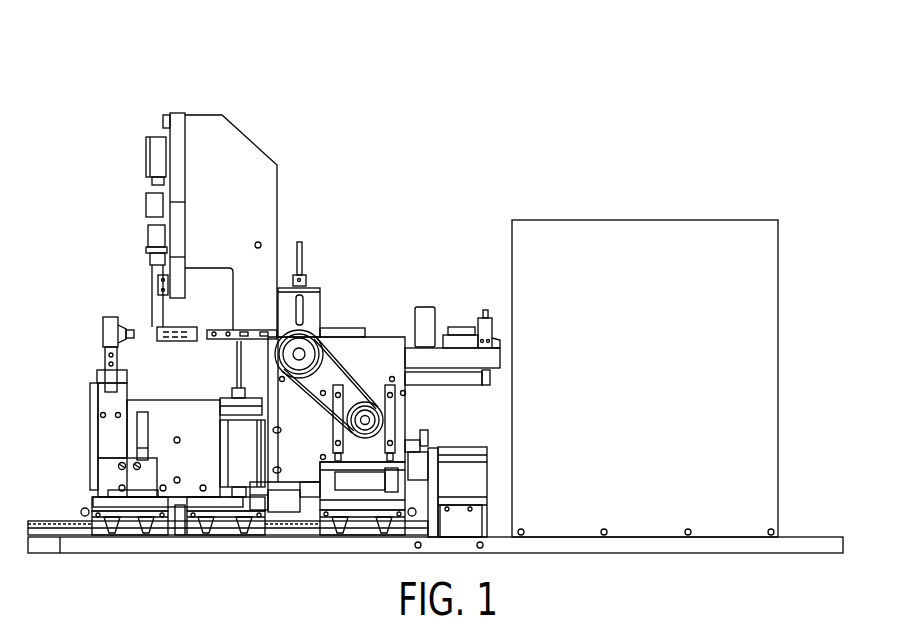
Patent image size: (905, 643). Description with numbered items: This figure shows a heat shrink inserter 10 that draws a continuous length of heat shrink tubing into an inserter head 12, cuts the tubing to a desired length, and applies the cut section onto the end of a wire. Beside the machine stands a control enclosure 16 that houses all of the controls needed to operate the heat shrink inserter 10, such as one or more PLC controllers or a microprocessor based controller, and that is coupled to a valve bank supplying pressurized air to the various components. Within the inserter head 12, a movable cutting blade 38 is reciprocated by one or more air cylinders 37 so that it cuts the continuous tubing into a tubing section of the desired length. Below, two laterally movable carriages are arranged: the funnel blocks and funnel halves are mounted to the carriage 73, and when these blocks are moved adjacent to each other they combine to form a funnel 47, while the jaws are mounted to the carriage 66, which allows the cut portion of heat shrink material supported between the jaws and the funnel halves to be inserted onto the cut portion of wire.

The heat shrink inserter 10 is at (492, 124).
The inserter head 12 is at (258, 80).
The control enclosure 16 is at (691, 243).
The funnel 47 is at (128, 325).
The cutting blade 38 is at (232, 362).
The air cylinder 37 is at (238, 458).
The carriage 73 is at (138, 503).
The carriage 66 is at (222, 512).